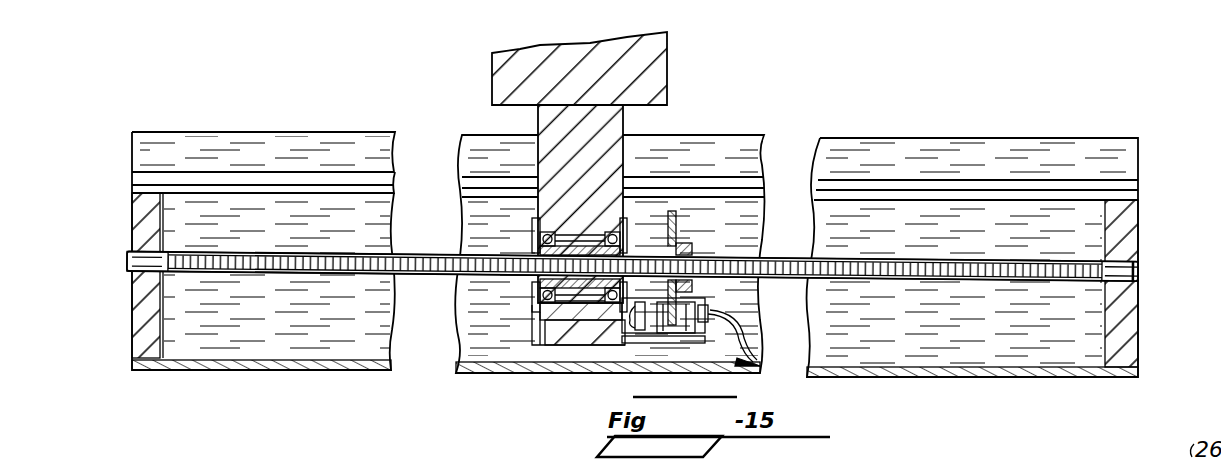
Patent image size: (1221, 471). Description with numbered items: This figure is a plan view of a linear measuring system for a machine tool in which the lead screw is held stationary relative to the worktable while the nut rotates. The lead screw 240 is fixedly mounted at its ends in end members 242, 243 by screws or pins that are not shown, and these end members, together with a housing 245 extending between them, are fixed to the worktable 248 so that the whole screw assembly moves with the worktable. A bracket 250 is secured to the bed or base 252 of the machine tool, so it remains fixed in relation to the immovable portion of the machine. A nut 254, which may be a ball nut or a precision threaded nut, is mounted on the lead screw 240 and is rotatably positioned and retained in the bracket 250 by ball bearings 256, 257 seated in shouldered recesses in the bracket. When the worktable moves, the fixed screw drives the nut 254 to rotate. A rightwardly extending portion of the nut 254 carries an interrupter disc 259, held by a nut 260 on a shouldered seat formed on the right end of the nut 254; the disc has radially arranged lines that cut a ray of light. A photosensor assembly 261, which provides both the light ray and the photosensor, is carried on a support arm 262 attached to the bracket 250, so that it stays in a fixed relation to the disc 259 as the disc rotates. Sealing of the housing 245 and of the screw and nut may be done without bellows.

The lead screw 240 is at (393, 246).
The end member 242 is at (137, 326).
The end member 243 is at (1130, 312).
The housing 245 is at (918, 371).
The worktable 248 is at (933, 145).
The bracket 250 is at (617, 128).
The bed or base 252 is at (662, 62).
The nut 254 is at (653, 240).
The ball bearing 256 is at (552, 347).
The ball bearing 257 is at (590, 313).
The interrupter disc 259 is at (687, 246).
The nut 260 is at (692, 243).
The photosensor assembly 261 is at (733, 322).
The support arm 262 is at (555, 345).